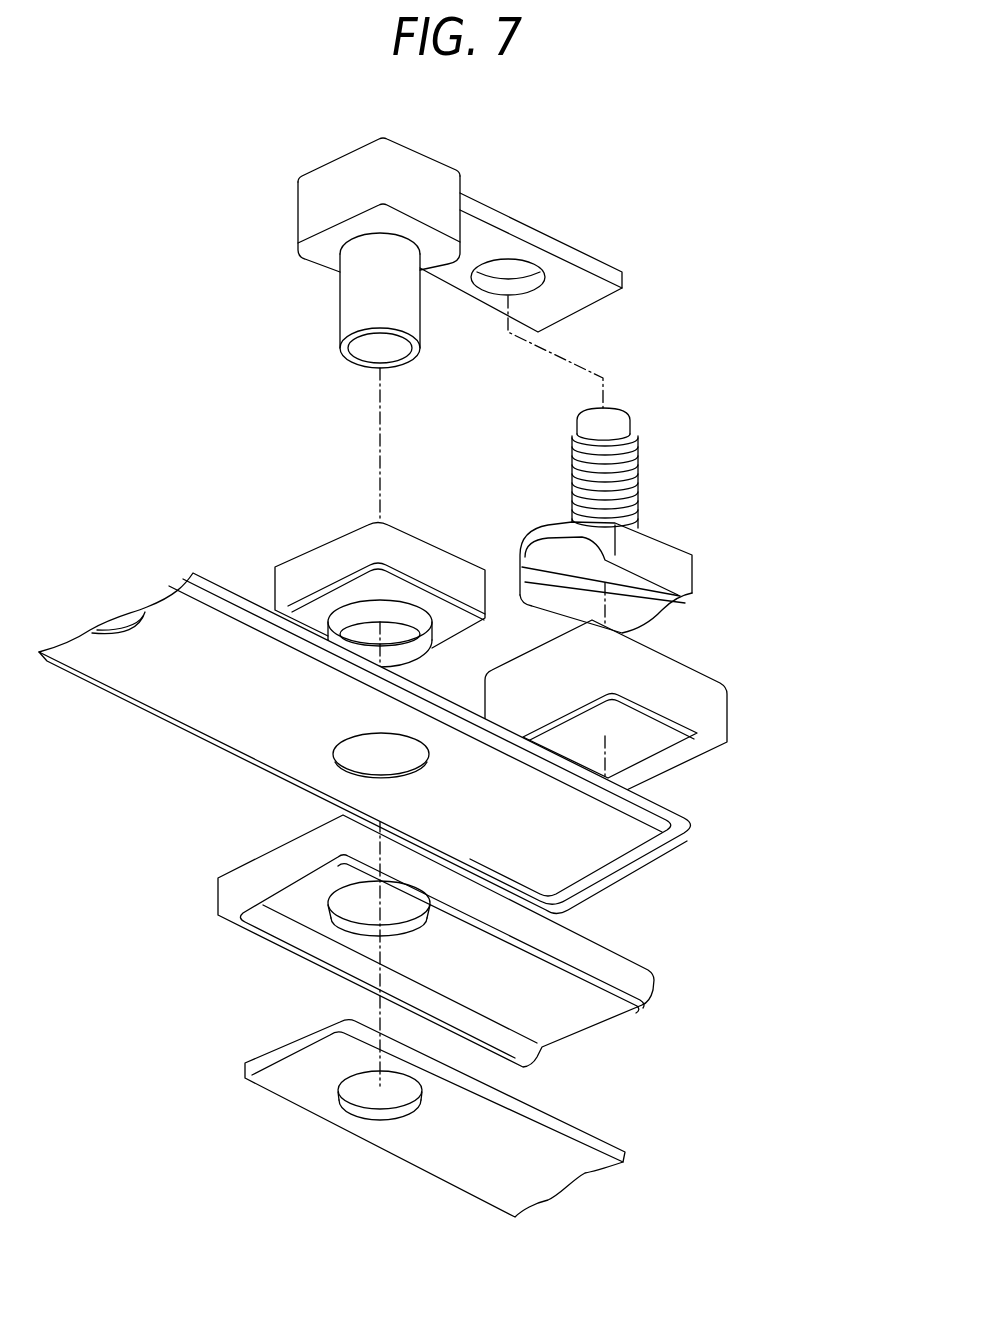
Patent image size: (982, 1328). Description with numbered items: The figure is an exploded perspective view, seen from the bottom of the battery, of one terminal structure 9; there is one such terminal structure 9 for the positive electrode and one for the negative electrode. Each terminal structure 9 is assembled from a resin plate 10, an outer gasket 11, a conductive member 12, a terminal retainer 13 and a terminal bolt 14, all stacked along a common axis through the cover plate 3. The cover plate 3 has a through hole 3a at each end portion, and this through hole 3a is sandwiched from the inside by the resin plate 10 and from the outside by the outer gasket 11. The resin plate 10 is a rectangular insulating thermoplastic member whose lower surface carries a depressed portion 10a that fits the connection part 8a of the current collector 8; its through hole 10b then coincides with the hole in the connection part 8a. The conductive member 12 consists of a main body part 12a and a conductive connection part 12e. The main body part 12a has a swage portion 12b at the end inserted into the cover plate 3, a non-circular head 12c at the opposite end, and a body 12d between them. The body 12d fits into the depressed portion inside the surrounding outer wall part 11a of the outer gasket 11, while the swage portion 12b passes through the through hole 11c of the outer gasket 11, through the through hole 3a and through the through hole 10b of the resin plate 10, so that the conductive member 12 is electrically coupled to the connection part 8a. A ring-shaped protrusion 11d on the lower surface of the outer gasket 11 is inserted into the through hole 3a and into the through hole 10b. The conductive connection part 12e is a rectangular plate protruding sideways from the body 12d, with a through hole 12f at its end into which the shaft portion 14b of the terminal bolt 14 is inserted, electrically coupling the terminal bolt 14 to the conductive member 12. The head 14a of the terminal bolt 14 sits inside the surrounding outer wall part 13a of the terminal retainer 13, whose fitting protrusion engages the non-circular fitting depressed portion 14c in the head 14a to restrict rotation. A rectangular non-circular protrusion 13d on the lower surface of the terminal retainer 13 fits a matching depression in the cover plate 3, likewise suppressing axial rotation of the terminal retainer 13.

The terminal structure 9 is at (218, 121).
The conductive member 12 is at (359, 242).
The main body part 12a is at (187, 165).
The swage portion 12b is at (355, 309).
The head 12c is at (338, 157).
The body 12d is at (327, 206).
The conductive connection part 12e is at (507, 222).
The through hole 12f is at (528, 278).
The outer gasket 11 is at (172, 425).
The outer wall part 11a is at (333, 560).
The through hole 11c is at (358, 642).
The ring-shaped protrusion 11d is at (350, 616).
The terminal bolt 14 is at (793, 418).
The head 14a is at (673, 568).
The shaft portion 14b is at (640, 470).
The fitting depressed portion 14c is at (647, 607).
The terminal retainer 13 is at (825, 698).
The outer wall part 13a is at (693, 698).
The protrusion 13d is at (683, 770).
The cover plate 3 is at (167, 688).
The through hole 3a is at (345, 776).
The resin plate 10 is at (647, 990).
The depressed portion 10a is at (557, 1002).
The through hole 10b is at (343, 920).
The current collector 8 is at (435, 1144).
The connection part 8a is at (475, 1177).